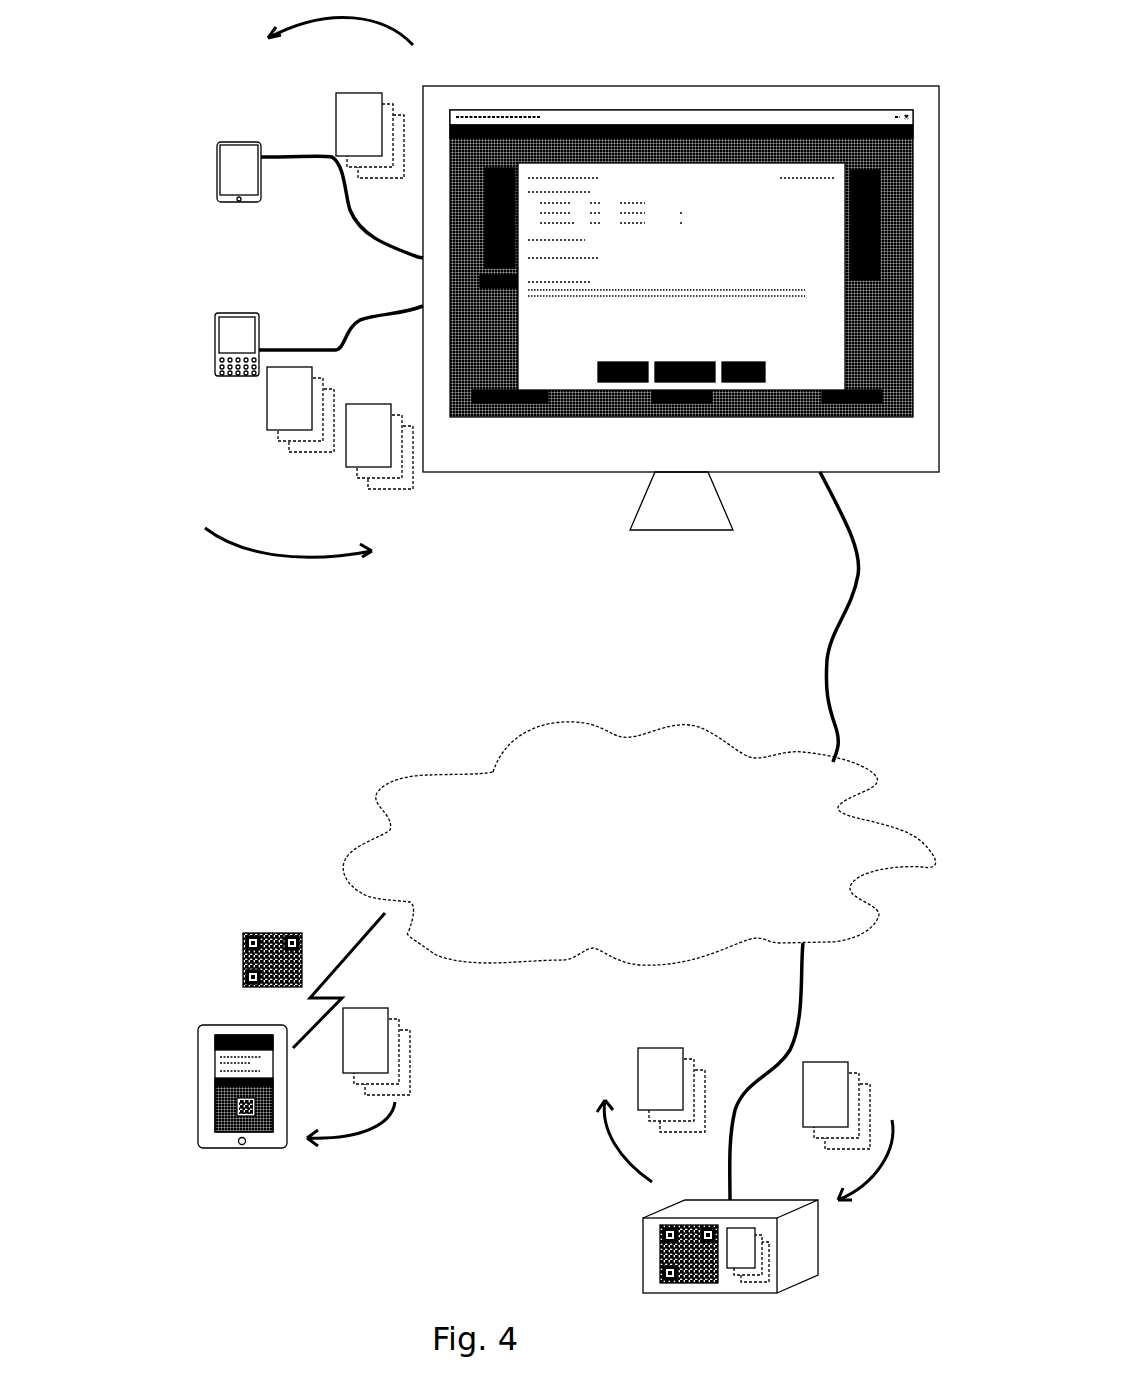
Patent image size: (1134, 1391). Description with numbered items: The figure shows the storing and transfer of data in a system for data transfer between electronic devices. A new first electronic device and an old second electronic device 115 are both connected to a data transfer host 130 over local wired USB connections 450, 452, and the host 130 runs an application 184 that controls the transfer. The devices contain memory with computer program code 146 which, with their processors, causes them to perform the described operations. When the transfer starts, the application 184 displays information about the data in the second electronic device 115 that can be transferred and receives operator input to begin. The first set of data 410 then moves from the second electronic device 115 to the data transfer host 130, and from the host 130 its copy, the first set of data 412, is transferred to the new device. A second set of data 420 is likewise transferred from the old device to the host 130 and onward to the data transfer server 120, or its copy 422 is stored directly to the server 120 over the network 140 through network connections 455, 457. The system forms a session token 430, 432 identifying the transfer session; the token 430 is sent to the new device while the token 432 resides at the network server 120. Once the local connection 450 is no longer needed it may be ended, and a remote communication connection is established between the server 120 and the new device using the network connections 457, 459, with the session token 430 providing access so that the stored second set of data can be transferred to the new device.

The second electronic device 115 is at (212, 345).
The data transfer server 120 is at (820, 1237).
The data transfer host 130 is at (910, 82).
The network 140 is at (882, 810).
The computer program code 146 is at (197, 1057).
The application 184 is at (730, 165).
The first set of data 410 is at (370, 87).
The first set of data (copy) 412 is at (288, 470).
The second set of data 420 is at (352, 482).
The second set of data (copy) 422 is at (855, 1063).
The session token 430 is at (240, 935).
The session token 432 is at (655, 1247).
The USB connection 450 is at (330, 175).
The USB connection 452 is at (343, 322).
The network connection 455 is at (828, 625).
The network connection 457 is at (785, 1020).
The network connection 459 is at (367, 918).